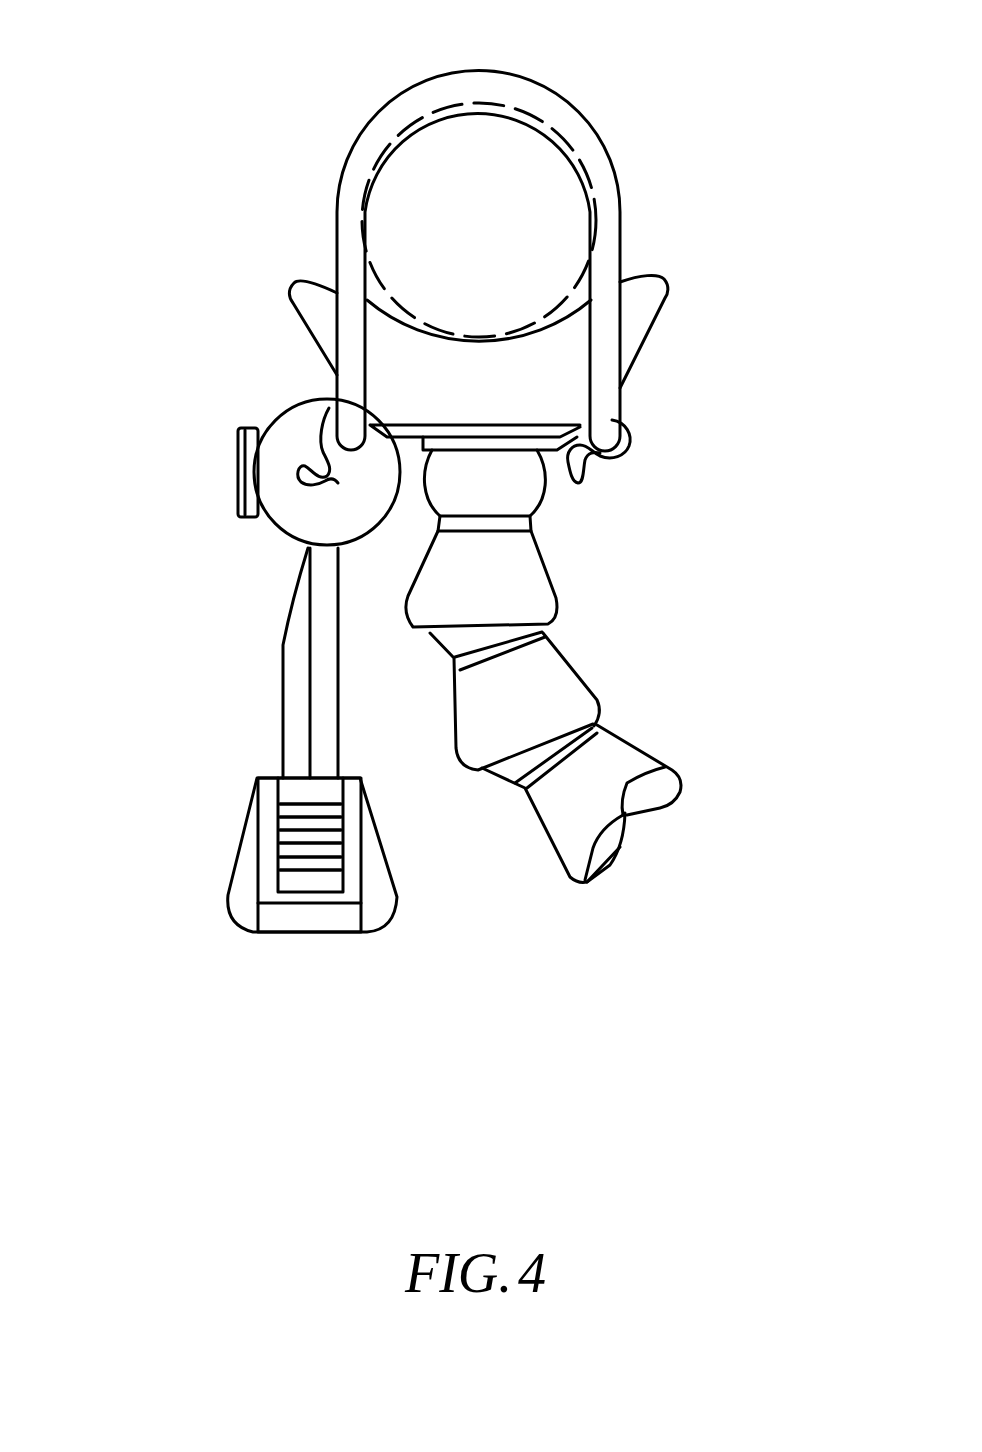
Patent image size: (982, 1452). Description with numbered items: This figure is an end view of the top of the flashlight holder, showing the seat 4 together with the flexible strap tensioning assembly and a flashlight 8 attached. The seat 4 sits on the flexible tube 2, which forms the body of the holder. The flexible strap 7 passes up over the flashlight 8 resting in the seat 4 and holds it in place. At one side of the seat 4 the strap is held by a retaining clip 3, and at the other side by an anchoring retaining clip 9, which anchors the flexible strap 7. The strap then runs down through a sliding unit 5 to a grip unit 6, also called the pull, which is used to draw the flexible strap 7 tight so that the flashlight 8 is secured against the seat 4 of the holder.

The flexible tube 2 is at (563, 610).
The retaining clip 3 is at (310, 482).
The seat 4 is at (635, 317).
The sliding unit 5 is at (268, 407).
The grip unit 6 is at (246, 898).
The flexible strap 7 is at (378, 135).
The flashlight 8 is at (523, 180).
The anchoring retaining clip 9 is at (618, 443).